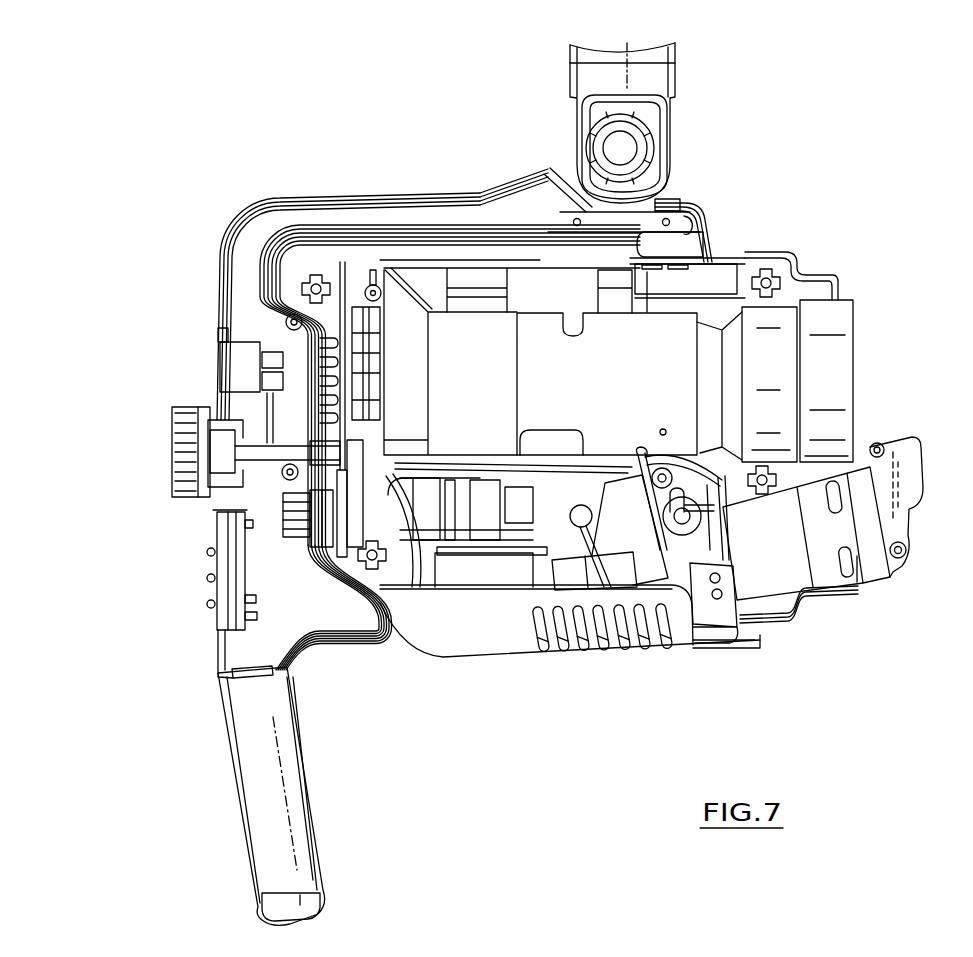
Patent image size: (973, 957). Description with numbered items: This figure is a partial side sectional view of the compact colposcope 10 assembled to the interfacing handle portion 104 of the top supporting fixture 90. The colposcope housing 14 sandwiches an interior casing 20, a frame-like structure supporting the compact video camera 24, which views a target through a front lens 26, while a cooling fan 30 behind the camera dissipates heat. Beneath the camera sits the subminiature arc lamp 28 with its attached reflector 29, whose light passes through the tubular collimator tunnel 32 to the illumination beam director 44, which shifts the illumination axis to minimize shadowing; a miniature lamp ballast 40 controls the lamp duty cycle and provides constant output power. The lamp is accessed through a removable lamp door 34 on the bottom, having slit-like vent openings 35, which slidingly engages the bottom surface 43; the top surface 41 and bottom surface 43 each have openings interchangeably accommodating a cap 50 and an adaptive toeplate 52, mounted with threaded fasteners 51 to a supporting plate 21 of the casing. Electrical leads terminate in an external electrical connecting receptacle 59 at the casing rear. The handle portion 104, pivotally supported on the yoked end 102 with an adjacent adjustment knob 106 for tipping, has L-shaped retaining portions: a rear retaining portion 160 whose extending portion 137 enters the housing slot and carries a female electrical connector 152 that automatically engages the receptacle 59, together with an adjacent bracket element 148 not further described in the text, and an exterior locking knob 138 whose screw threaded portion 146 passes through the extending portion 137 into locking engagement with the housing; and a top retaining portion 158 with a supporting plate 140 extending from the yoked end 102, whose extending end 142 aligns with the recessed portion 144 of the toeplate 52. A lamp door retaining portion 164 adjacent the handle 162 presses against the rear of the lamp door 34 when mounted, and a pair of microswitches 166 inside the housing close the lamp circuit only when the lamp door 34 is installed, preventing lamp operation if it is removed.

The compact colposcope 10 is at (906, 580).
The housing 14 is at (826, 270).
The interior casing 20 is at (695, 283).
The supporting plate 21 is at (742, 254).
The video camera 24 is at (507, 327).
The front lens 26 is at (848, 383).
The arc lamp 28 is at (570, 573).
The reflector 29 is at (613, 577).
The cooling fan 30 is at (384, 314).
The tubular collimator tunnel 32 is at (780, 578).
The lamp door 34 is at (435, 637).
The vent openings 35 is at (657, 643).
The lamp ballast 40 is at (478, 528).
The top surface 41 is at (380, 232).
The bottom surface 43 is at (783, 627).
The illumination beam director 44 is at (910, 500).
The cap 50 is at (723, 650).
The threaded fasteners 51 is at (657, 268).
The adaptive toeplate 52 is at (690, 245).
The electrical connecting receptacle 59 is at (310, 545).
The top supporting fixture 90 is at (577, 57).
The yoked end 102 is at (665, 89).
The interfacing handle portion 104 is at (260, 232).
The adjustment knob 106 is at (612, 150).
The extending portion 137 is at (275, 412).
The locking knob 138 is at (178, 443).
The supporting plate 140 is at (647, 207).
The extending end 142 is at (680, 220).
The recessed portion 144 is at (687, 222).
The screw threaded portion 146 is at (268, 458).
The bracket 148 is at (232, 362).
The female electrical connector 152 is at (283, 505).
The top retaining portion 158 is at (464, 195).
The rear retaining portion 160 is at (205, 508).
The handle 162 is at (253, 828).
The lamp door retaining portion 164 is at (317, 620).
The microswitches 166 is at (727, 633).